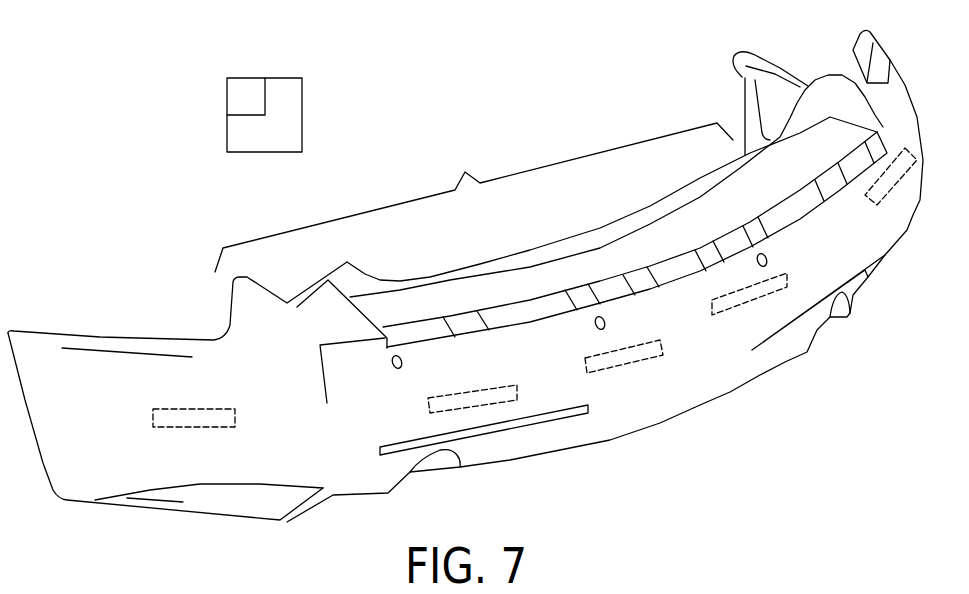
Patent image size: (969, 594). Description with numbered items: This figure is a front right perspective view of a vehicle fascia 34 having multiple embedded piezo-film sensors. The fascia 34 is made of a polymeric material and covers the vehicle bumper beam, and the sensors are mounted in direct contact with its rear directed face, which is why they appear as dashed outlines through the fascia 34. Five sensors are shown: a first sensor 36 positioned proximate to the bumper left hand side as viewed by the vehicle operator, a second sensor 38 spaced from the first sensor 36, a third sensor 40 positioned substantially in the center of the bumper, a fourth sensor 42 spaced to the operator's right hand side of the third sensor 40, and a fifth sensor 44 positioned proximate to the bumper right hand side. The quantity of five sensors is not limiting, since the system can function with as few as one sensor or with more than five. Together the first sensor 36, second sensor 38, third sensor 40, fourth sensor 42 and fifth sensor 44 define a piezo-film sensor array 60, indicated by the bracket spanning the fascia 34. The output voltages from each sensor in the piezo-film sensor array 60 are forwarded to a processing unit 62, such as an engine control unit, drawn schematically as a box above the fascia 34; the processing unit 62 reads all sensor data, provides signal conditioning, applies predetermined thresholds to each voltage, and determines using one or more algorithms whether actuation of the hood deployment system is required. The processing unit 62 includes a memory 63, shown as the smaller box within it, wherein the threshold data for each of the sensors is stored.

The fascia 34 is at (115, 380).
The first sensor 36 is at (887, 167).
The second sensor 38 is at (750, 302).
The third sensor 40 is at (625, 365).
The fourth sensor 42 is at (472, 407).
The fifth sensor 44 is at (193, 427).
The piezo-film sensor array 60 is at (474, 197).
The processing unit 62 is at (285, 123).
The memory 63 is at (243, 97).